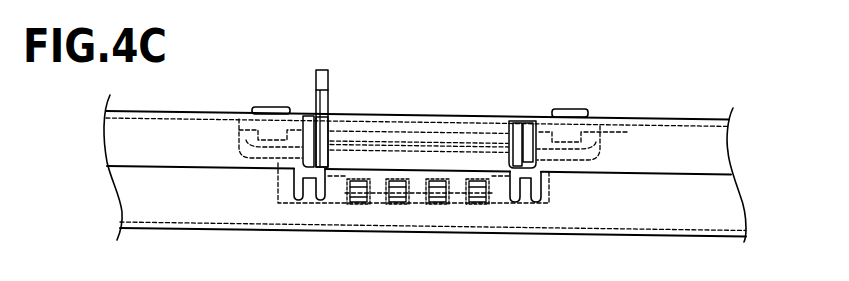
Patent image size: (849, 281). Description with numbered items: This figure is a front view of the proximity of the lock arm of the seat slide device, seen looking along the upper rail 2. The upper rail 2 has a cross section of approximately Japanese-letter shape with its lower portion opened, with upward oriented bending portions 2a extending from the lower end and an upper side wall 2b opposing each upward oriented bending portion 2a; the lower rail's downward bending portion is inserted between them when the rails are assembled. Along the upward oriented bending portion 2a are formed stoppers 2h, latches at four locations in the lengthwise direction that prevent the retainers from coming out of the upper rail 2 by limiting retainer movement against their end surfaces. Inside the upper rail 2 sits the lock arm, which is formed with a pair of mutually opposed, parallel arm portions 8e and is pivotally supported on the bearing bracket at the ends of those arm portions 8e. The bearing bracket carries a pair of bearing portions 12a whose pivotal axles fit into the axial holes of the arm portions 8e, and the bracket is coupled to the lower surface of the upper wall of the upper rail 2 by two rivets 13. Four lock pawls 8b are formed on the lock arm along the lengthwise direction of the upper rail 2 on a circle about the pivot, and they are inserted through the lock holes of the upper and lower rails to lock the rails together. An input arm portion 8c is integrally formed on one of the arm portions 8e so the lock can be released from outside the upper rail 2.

The upper rail 2 is at (132, 197).
The upward oriented bending portion 2a is at (727, 208).
The upper side wall 2b is at (712, 153).
The stopper 2h is at (312, 188).
The lock pawl 8b is at (437, 205).
The input arm portion 8c is at (323, 80).
The arm portion 8e is at (328, 132).
The bearing portion 12a is at (312, 117).
The rivet 13 is at (265, 107).